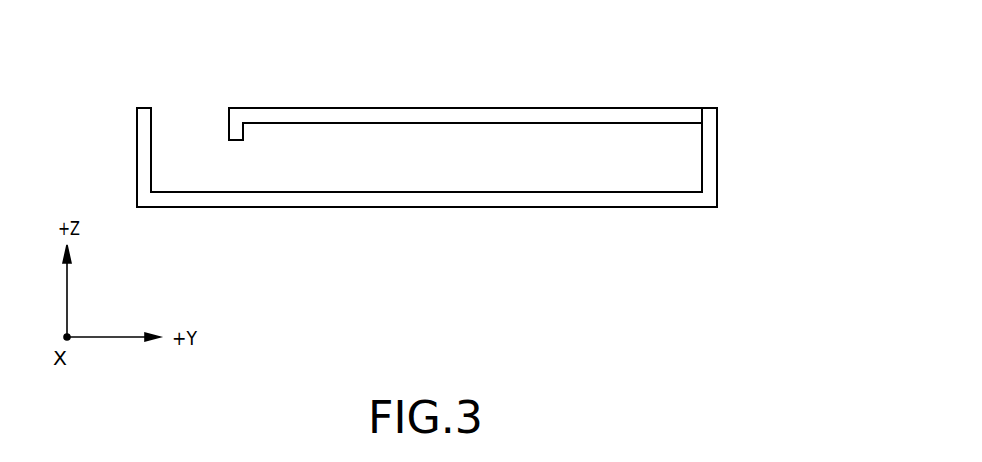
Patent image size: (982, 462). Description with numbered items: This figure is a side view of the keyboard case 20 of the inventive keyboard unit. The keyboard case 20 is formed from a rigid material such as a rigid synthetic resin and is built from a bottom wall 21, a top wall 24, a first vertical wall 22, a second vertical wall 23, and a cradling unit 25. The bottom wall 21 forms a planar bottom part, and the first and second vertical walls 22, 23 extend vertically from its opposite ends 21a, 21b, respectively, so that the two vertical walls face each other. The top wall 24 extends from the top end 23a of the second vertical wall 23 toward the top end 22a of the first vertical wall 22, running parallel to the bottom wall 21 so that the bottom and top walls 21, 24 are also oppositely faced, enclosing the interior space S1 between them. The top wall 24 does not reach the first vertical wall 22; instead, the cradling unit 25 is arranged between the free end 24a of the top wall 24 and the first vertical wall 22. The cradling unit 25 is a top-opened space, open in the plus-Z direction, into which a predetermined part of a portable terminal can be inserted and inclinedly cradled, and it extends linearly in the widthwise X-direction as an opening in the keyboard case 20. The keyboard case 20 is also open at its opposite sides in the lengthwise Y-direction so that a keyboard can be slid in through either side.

The keyboard case 20 is at (455, 67).
The bottom wall 21 is at (365, 199).
The end of bottom wall 21a is at (148, 200).
The end of bottom wall 21b is at (710, 202).
The first vertical wall 22 is at (143, 143).
The top end of first vertical wall 22a is at (142, 106).
The second vertical wall 23 is at (710, 160).
The top end of second vertical wall 23a is at (708, 118).
The top wall 24 is at (616, 117).
The free end of top wall 24a is at (230, 143).
The cradling unit 25 is at (196, 145).
The accommodation space S1 is at (550, 172).